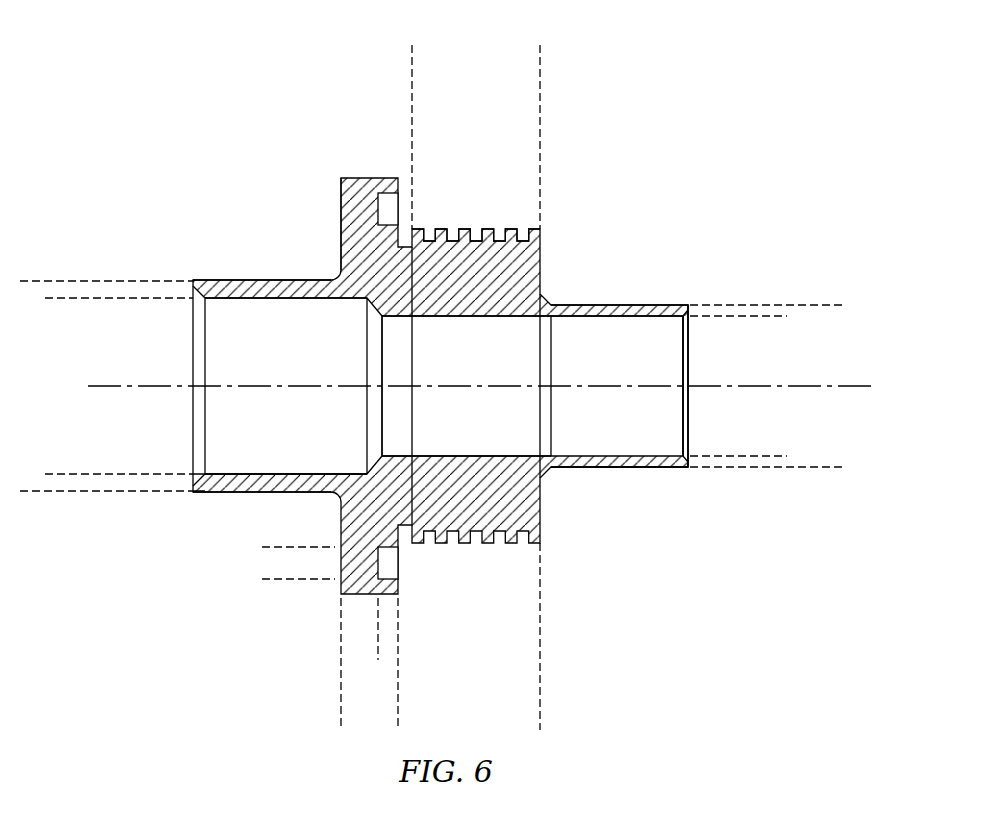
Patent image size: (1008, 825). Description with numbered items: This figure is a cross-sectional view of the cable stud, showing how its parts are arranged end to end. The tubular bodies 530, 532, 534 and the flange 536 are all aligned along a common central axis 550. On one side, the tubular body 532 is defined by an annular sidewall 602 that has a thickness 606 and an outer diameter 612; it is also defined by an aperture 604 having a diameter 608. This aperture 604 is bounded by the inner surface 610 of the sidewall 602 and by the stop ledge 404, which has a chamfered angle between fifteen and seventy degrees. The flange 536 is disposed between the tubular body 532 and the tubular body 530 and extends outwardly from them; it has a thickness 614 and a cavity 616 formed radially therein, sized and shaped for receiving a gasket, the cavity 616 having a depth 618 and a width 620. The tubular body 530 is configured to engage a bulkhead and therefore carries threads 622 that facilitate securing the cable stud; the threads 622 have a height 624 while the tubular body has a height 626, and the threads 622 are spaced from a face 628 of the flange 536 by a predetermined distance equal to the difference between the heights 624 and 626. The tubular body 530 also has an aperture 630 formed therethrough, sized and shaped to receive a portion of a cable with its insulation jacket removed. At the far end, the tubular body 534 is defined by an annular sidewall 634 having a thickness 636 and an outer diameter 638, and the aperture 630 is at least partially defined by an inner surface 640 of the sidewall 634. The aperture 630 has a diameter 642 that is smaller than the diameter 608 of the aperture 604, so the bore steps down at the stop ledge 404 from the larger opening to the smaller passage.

The stop ledge 404 is at (390, 473).
The tubular body 530 is at (502, 204).
The tubular body 532 is at (286, 275).
The tubular body 534 is at (685, 477).
The flange 536 is at (333, 220).
The central axis 550 is at (330, 385).
The annular sidewall 602 is at (244, 493).
The aperture 604 is at (234, 332).
The thickness 606 is at (115, 430).
The diameter 608 is at (57, 307).
The inner surface 610 is at (245, 474).
The outer diameter 612 is at (27, 482).
The thickness 614 is at (407, 687).
The cavity 616 is at (396, 206).
The depth 618 is at (350, 647).
The width 620 is at (275, 510).
The threads 622 is at (525, 220).
The height 624 is at (421, 63).
The height 626 is at (531, 715).
The face 628 is at (400, 592).
The aperture 630 is at (658, 420).
The annular sidewall 634 is at (612, 469).
The thickness 636 is at (720, 325).
The outer diameter 638 is at (832, 314).
The inner surface 640 is at (603, 317).
The diameter 642 is at (780, 325).